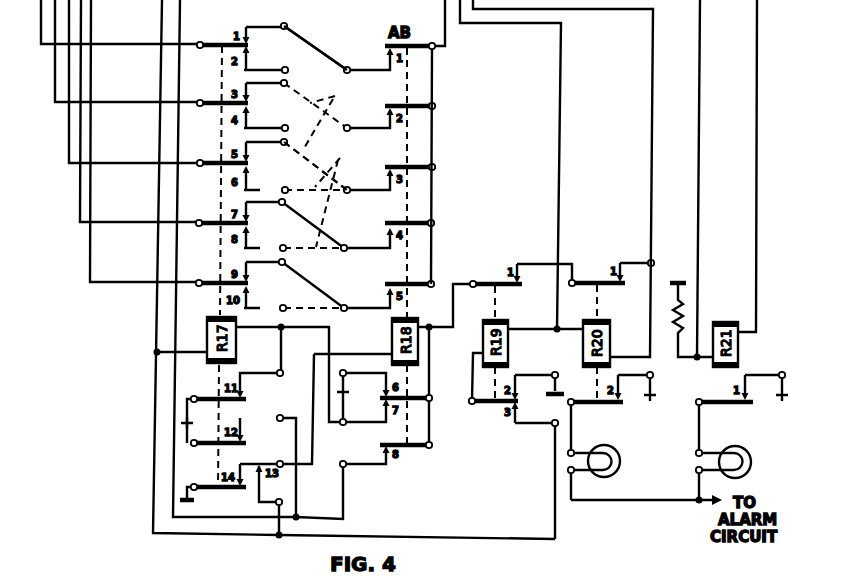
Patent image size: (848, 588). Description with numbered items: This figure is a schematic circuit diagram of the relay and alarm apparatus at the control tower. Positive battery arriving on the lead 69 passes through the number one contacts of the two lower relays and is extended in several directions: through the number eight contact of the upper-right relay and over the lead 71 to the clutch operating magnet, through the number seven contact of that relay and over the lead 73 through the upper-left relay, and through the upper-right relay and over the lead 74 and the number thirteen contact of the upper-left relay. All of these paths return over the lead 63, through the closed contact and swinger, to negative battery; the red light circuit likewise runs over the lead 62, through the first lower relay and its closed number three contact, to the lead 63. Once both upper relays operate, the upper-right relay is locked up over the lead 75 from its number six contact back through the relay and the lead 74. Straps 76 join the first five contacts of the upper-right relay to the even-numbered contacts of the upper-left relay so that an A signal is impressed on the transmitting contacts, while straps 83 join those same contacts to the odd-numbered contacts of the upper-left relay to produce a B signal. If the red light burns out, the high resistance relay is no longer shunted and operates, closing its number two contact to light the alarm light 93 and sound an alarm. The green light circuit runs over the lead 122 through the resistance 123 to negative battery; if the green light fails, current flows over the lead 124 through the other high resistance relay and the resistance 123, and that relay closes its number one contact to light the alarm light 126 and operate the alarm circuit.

The lead 62 is at (558, 105).
The lead 63 is at (483, 540).
The lead 69 is at (651, 107).
The lead 71 is at (156, 390).
The lead 73 is at (330, 342).
The lead 74 is at (313, 402).
The lead 75 is at (430, 388).
The straps 76 is at (325, 128).
The straps 83 is at (323, 50).
The alarm light 93 is at (617, 449).
The lead 122 is at (699, 115).
The resistance 123 is at (683, 308).
The lead 124 is at (756, 112).
The alarm light 126 is at (748, 449).